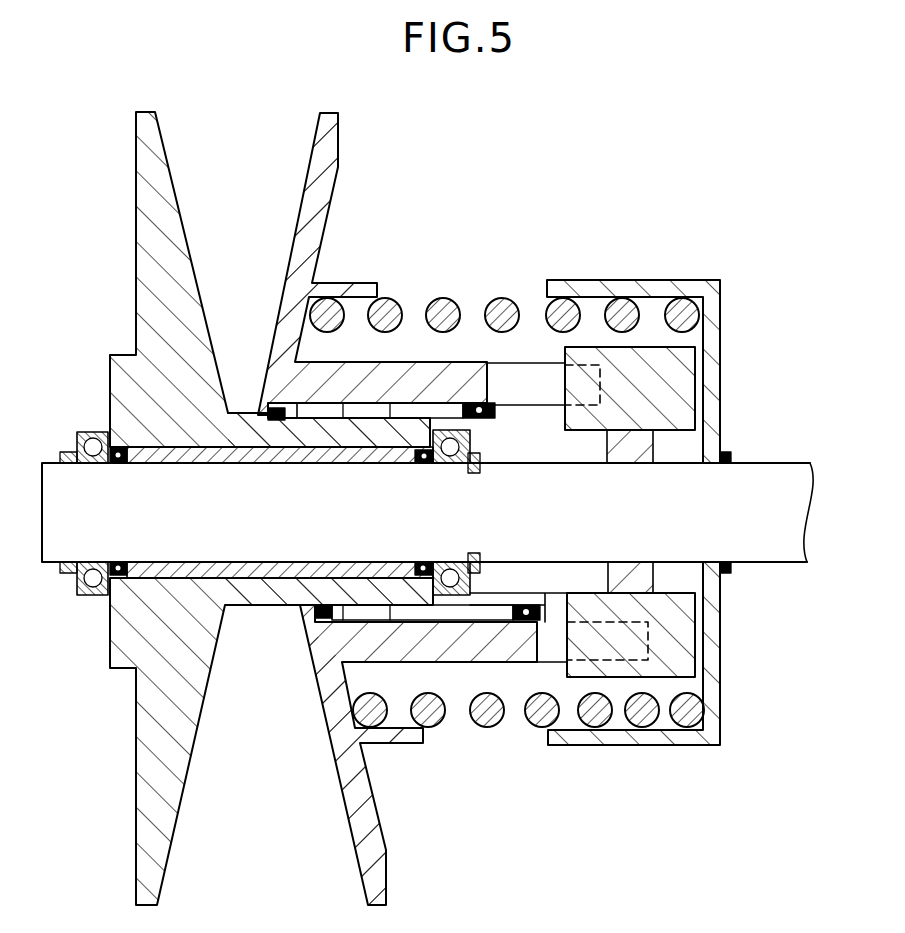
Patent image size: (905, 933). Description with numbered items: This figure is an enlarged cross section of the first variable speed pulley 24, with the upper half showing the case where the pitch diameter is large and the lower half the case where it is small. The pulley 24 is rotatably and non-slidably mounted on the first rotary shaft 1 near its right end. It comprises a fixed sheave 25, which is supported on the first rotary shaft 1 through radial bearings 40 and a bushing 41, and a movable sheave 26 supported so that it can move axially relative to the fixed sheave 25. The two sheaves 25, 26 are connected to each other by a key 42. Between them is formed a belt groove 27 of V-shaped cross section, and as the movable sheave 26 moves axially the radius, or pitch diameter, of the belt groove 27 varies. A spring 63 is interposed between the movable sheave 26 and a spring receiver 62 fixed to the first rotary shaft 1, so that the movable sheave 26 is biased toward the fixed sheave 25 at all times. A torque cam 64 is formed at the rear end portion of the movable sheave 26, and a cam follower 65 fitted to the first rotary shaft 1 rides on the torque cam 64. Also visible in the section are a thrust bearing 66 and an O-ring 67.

The first rotary shaft 1 is at (788, 468).
The first variable speed pulley 24 is at (373, 507).
The fixed sheave 25 is at (133, 255).
The movable sheave 26 is at (297, 222).
The belt groove 27 is at (258, 178).
The radial bearings 40 is at (120, 463).
The bushing 41 is at (314, 463).
The key 42 is at (372, 447).
The spring receiver 62 is at (720, 372).
The spring 63 is at (457, 308).
The torque cam 64 is at (547, 393).
The cam follower 65 is at (590, 430).
The thrust bearing 66 is at (93, 463).
The O-ring 67 is at (276, 425).